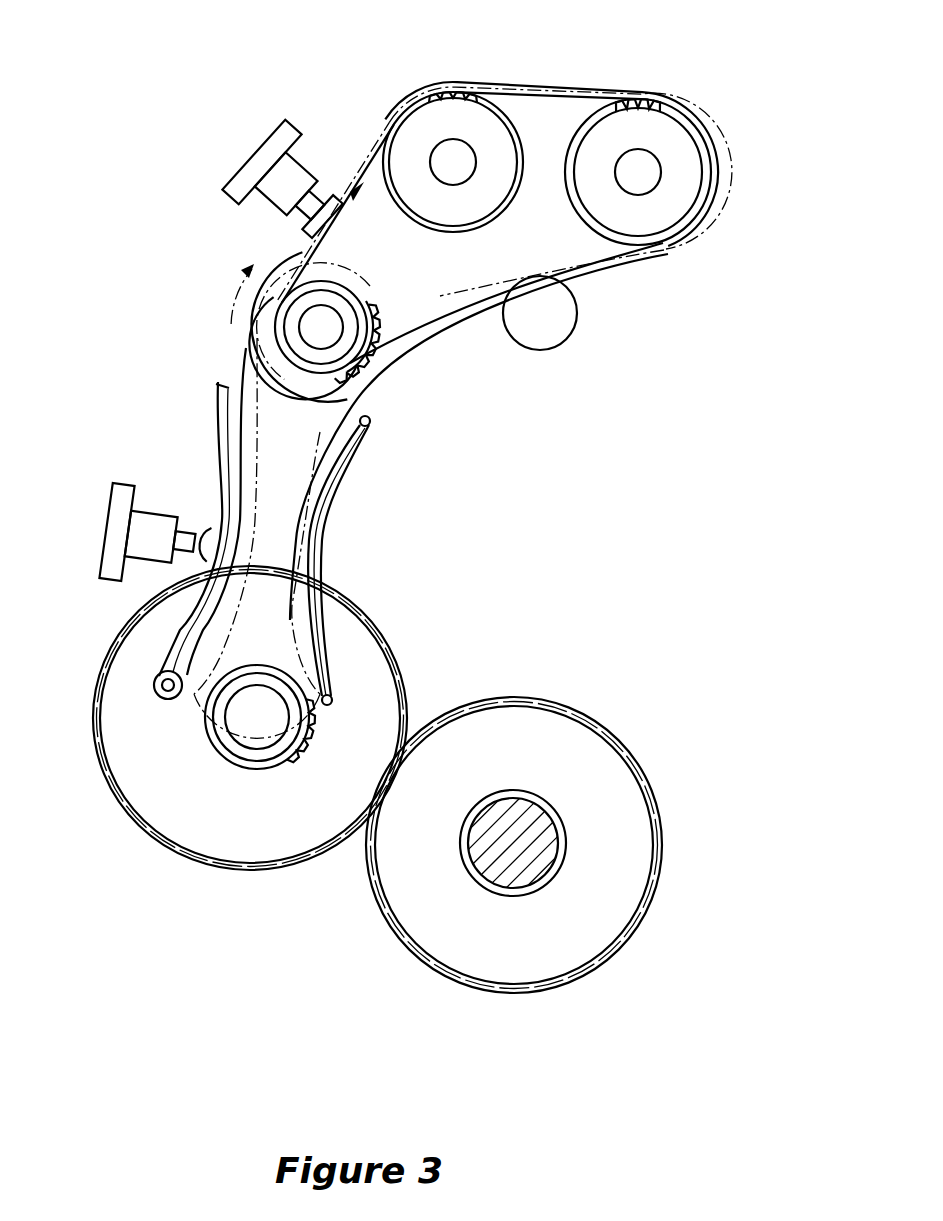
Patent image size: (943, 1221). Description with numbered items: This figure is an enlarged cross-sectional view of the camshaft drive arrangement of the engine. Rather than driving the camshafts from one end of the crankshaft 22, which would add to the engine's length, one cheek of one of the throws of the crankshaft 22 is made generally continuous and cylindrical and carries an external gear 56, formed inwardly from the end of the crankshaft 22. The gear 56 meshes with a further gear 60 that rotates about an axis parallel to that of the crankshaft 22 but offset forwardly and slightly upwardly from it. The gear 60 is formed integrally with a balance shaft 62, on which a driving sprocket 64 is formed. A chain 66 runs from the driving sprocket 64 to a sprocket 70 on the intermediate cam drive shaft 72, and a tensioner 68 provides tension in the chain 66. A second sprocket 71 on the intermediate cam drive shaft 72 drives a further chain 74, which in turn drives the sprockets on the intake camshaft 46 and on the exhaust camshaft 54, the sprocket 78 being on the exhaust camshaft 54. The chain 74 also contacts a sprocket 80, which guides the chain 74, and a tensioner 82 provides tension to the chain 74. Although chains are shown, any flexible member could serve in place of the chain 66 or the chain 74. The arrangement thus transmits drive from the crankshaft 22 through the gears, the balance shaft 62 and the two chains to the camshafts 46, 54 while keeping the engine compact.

The crankshaft 22 is at (504, 888).
The intake camshaft 46 is at (440, 172).
The exhaust camshaft 54 is at (661, 162).
The external gear 56 is at (631, 758).
The gear 60 is at (145, 830).
The balance shaft 62 is at (258, 685).
The driving sprocket 64 is at (256, 770).
The chain 66 is at (363, 393).
The tensioner 68 is at (110, 531).
The sprocket 70 is at (366, 304).
The sprocket 71 is at (309, 362).
The intermediate cam drive shaft 72 is at (309, 330).
The chain 74 is at (567, 86).
The sprocket 78 is at (582, 126).
The sprocket 80 is at (560, 346).
The tensioner 82 is at (255, 155).